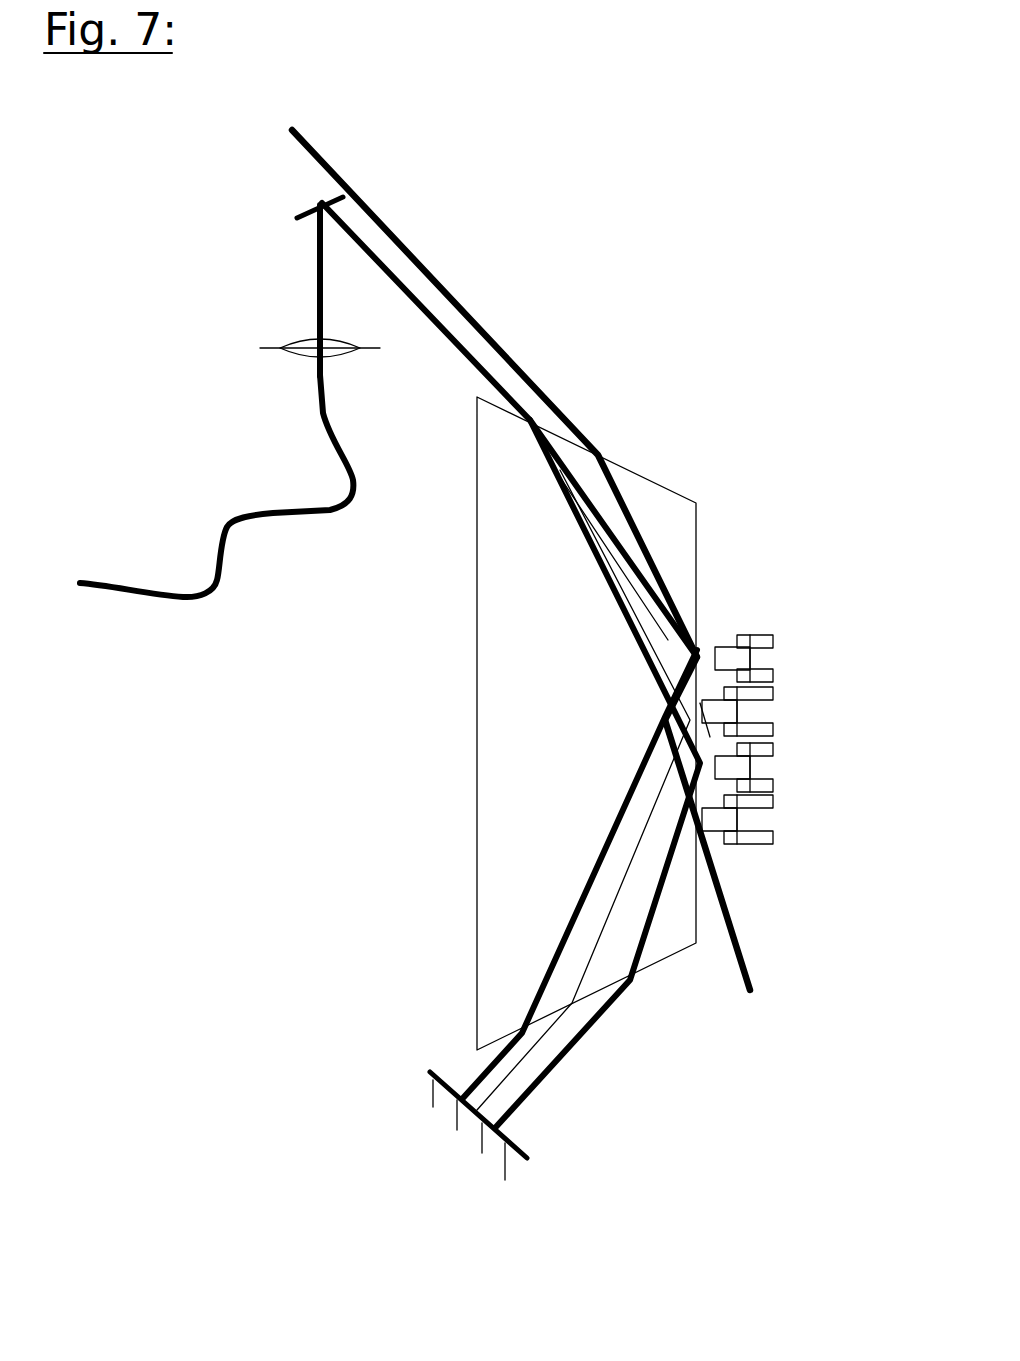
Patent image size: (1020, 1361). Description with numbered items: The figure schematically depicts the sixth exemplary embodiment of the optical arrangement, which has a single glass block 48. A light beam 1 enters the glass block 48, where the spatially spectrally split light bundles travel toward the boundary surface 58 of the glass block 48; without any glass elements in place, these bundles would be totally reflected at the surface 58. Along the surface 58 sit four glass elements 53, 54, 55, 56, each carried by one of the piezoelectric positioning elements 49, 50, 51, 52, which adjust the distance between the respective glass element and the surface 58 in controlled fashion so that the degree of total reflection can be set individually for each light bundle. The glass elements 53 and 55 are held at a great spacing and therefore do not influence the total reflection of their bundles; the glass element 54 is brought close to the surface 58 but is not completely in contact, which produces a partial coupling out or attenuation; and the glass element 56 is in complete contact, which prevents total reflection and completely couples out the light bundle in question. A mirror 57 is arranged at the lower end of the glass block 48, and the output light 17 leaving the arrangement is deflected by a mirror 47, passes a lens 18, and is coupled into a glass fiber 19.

The light beam 1 is at (343, 182).
The output light 17 is at (437, 333).
The lens 18 is at (307, 347).
The glass fiber 19 is at (213, 547).
The mirror 47 is at (303, 213).
The glass block 48 is at (663, 518).
The piezoelectric positioning element 49 is at (764, 635).
The piezoelectric positioning element 50 is at (748, 695).
The piezoelectric positioning element 51 is at (760, 752).
The piezoelectric positioning element 52 is at (737, 798).
The glass element 53 is at (737, 658).
The glass element 54 is at (725, 717).
The glass element 55 is at (723, 765).
The glass element 56 is at (725, 822).
The mirror 57 is at (503, 1133).
The surface of glass block 58 is at (700, 928).